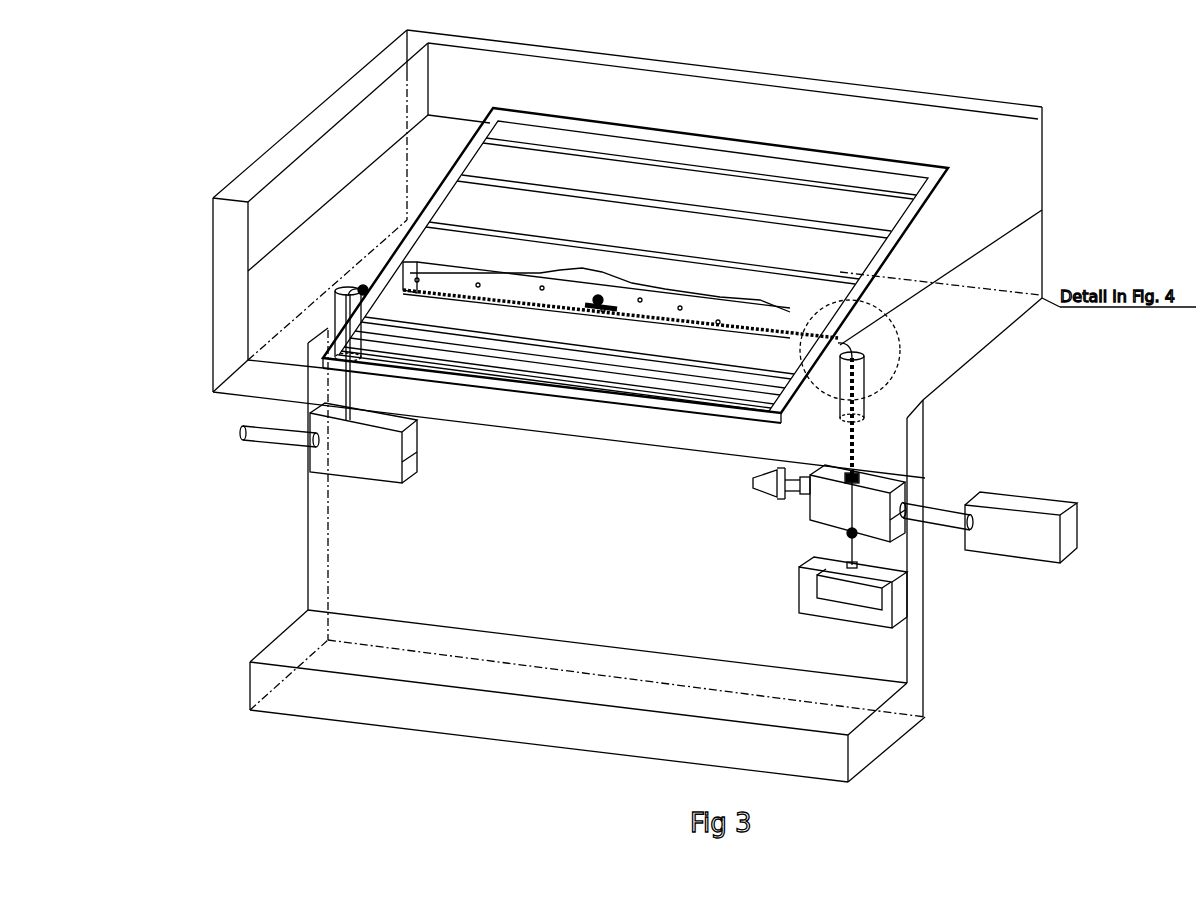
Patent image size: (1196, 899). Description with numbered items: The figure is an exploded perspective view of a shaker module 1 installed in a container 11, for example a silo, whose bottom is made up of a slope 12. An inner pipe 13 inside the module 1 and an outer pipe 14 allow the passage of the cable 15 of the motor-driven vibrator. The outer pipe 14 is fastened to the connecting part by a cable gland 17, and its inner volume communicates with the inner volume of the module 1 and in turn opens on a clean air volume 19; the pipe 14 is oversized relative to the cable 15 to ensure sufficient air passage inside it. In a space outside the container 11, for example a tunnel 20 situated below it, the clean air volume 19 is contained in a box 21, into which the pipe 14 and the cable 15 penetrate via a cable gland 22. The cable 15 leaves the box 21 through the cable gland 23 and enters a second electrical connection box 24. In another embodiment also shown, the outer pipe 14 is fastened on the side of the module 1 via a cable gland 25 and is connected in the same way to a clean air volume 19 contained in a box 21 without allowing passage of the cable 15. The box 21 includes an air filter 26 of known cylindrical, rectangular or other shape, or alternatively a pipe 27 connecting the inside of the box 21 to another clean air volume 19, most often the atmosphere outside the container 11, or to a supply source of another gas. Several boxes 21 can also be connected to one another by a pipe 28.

The module 1 is at (644, 254).
The container 11 is at (883, 118).
The slope 12 is at (990, 260).
The inner pipe 13 is at (685, 310).
The outer pipe 14 is at (345, 288).
The cable 15 is at (598, 282).
The cable gland 17 is at (897, 353).
The clean air volume 19 is at (368, 448).
The tunnel 20 is at (677, 628).
The box 21 is at (402, 462).
The cable gland 22 is at (856, 479).
The cable gland 23 is at (850, 537).
The second electrical connection box 24 is at (893, 615).
The cable gland 25 is at (362, 288).
The air filter 26 is at (752, 481).
The pipe 27 is at (300, 430).
The pipe 28 is at (935, 510).